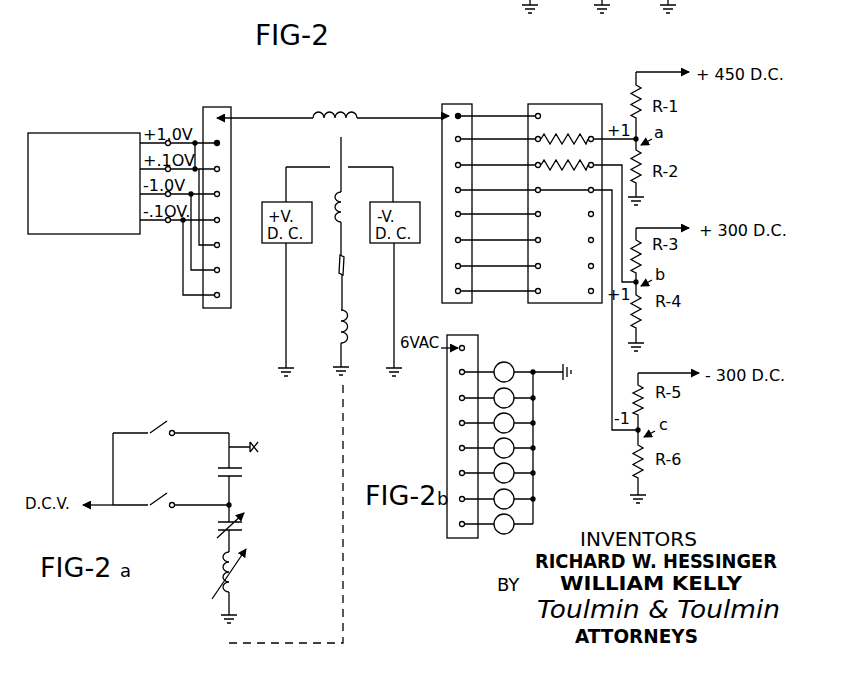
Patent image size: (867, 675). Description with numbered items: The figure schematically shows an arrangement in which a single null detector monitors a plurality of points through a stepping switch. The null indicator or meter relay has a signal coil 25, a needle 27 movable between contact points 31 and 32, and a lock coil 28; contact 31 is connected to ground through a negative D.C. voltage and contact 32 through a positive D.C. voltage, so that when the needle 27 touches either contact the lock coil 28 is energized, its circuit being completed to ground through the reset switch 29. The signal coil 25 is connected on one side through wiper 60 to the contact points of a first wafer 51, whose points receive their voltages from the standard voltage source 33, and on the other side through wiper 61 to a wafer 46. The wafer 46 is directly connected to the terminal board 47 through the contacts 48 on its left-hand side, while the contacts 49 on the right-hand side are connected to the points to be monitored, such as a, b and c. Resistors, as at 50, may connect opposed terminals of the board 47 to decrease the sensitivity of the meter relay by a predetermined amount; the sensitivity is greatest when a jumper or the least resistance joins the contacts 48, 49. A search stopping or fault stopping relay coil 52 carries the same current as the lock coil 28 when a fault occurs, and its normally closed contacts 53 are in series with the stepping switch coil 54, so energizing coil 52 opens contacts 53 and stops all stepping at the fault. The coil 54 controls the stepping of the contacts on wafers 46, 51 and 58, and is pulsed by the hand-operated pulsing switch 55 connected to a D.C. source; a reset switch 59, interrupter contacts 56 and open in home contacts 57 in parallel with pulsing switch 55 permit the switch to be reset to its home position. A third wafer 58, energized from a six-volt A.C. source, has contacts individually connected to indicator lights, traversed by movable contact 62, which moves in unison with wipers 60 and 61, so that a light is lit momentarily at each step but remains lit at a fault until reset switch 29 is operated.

In FIG. 2, the signal coil 25 is at (360, 117).
In FIG. 2, the needle 27 is at (344, 155).
In FIG. 2, the lock coil 28 is at (341, 222).
In FIG. 2, the reset switch 29 is at (341, 275).
In FIG. 2, the contact point 31 is at (351, 168).
In FIG. 2, the contact point 32 is at (330, 166).
In FIG. 2, the standard voltage source 33 is at (75, 234).
In FIG. 2, the wafer 46 is at (462, 104).
In FIG. 2, the terminal board 47 is at (557, 108).
In FIG. 2, the contacts 48 is at (570, 182).
In FIG. 2, the contacts 49 is at (605, 101).
In FIG. 2, the resistor 50 is at (568, 138).
In FIG. 2, the first wafer 51 is at (205, 107).
In FIG. 2, the search stopping relay coil 52 is at (341, 345).
In FIG. 2A, the normally closed contacts 53 is at (247, 527).
In FIG. 2A, the stepping switch coil 54 is at (246, 578).
In FIG. 2A, the pulsing switch 55 is at (150, 501).
In FIG. 2A, the interrupter contacts 56 is at (252, 446).
In FIG. 2A, the open in home contacts 57 is at (246, 478).
In FIG. 2B, the third wafer 58 is at (452, 540).
In FIG. 2A, the reset switch 59 is at (152, 428).
In FIG. 2, the wiper 60 is at (233, 116).
In FIG. 2, the wiper 61 is at (447, 118).
In FIG. 2B, the movable contact 62 is at (475, 337).